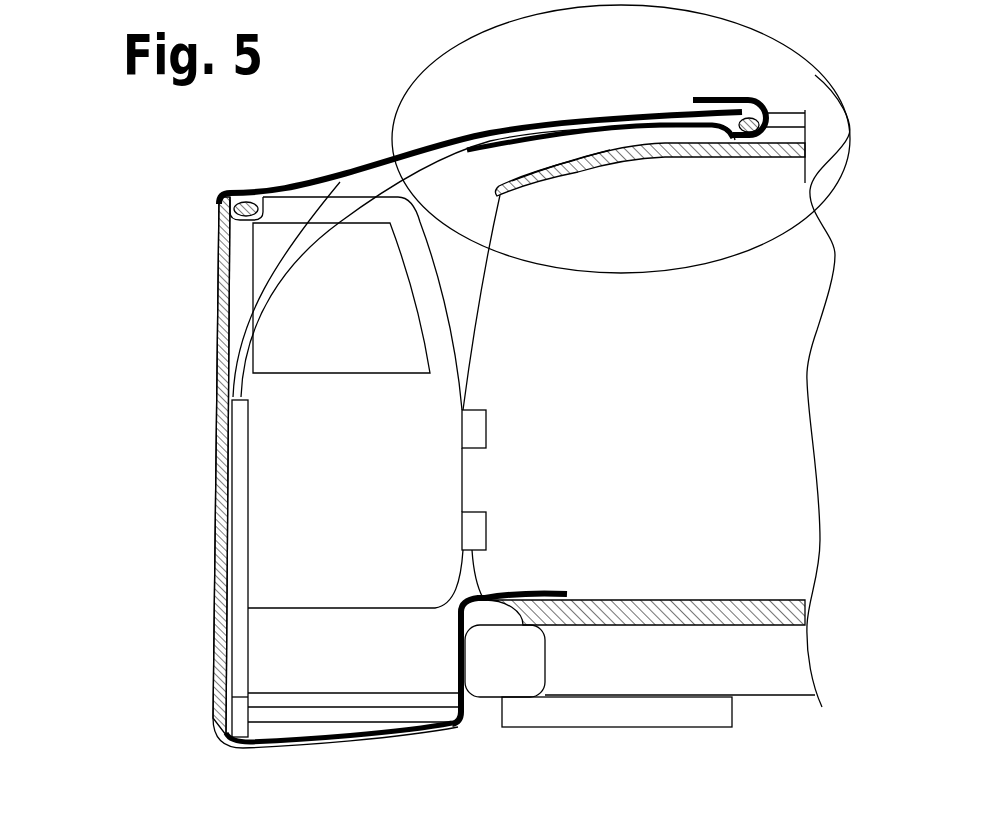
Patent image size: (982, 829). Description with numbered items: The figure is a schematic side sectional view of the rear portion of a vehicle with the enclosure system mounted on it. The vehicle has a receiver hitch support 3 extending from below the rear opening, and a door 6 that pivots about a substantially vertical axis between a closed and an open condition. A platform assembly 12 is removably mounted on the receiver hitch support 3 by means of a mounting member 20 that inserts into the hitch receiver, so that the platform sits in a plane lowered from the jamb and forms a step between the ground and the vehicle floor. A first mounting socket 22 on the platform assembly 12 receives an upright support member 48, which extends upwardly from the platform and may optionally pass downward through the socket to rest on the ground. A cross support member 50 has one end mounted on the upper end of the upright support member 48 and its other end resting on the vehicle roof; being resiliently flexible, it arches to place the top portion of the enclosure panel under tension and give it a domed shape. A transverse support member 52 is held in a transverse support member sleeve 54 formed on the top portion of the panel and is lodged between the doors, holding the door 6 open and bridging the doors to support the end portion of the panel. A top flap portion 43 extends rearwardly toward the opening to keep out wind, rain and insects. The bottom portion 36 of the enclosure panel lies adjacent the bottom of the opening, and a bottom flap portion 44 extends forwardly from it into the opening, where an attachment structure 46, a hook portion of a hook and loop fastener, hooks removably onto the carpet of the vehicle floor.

The receiver hitch support 3 is at (655, 718).
The door 6 is at (837, 182).
The platform assembly 12 is at (262, 695).
The mounting member 20 is at (478, 715).
The first mounting socket 22 is at (233, 697).
The bottom portion 36 is at (347, 747).
The top flap portion 43 is at (597, 148).
The bottom flap portion 44 is at (463, 617).
The attachment structure 46 is at (542, 593).
The upright support member 48 is at (240, 502).
The cross support member 50 is at (288, 265).
The transverse support member 52 is at (233, 200).
The transverse support member sleeve 54 is at (247, 220).